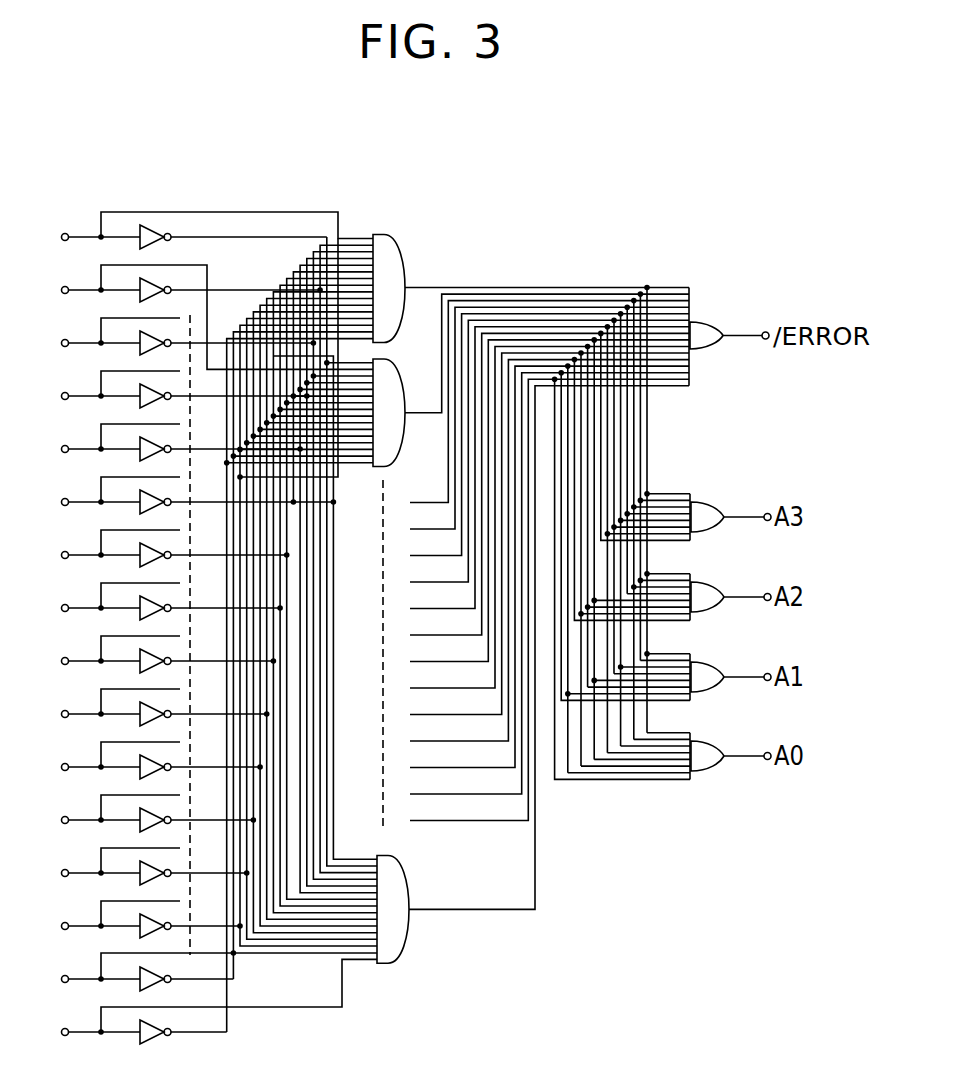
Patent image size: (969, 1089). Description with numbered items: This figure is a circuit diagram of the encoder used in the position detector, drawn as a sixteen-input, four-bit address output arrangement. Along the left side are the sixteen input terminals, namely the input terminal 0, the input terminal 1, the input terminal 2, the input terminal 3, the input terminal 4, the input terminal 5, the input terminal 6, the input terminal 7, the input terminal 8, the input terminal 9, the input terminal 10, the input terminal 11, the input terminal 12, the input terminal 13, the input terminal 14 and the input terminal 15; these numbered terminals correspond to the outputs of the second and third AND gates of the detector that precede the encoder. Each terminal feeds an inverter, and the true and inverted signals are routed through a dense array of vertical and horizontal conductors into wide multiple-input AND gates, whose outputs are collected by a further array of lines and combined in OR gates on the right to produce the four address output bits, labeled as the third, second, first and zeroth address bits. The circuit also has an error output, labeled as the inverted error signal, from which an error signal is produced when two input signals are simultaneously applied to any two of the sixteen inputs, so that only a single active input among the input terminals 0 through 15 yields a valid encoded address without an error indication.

The input terminal 0 is at (209, 1002).
The input terminal 1 is at (209, 971).
The input terminal 2 is at (142, 921).
The input terminal 3 is at (146, 868).
The input terminal 4 is at (149, 815).
The input terminal 5 is at (152, 762).
The input terminal 6 is at (156, 709).
The input terminal 7 is at (159, 656).
The input terminal 8 is at (162, 603).
The input terminal 9 is at (166, 550).
The input terminal 10 is at (184, 497).
The input terminal 11 is at (168, 444).
The input terminal 12 is at (171, 391).
The input terminal 13 is at (174, 338).
The input terminal 14 is at (203, 317).
The input terminal 15 is at (203, 232).